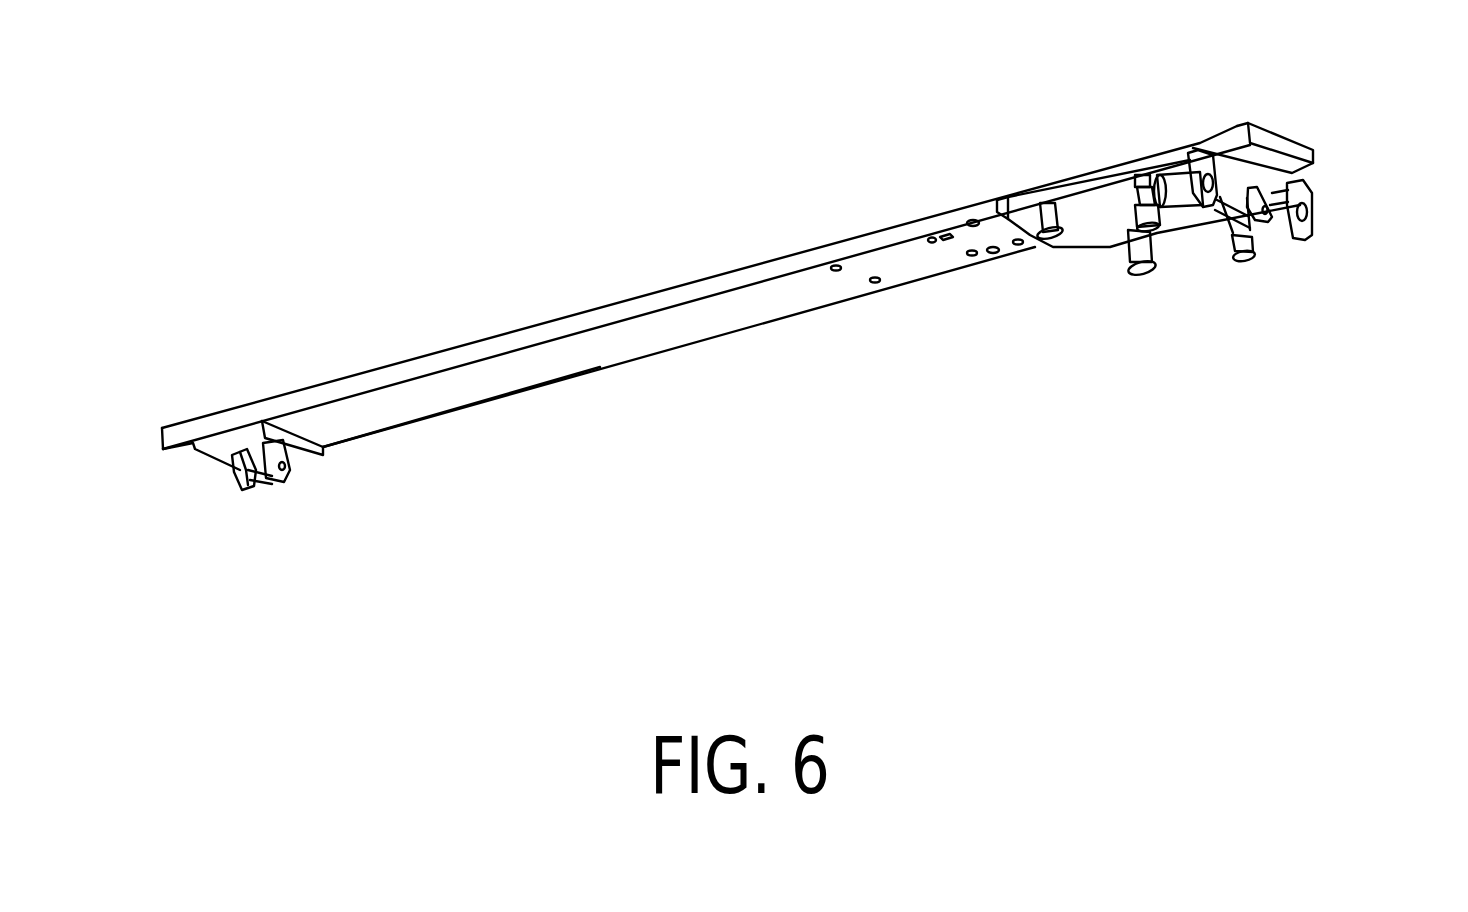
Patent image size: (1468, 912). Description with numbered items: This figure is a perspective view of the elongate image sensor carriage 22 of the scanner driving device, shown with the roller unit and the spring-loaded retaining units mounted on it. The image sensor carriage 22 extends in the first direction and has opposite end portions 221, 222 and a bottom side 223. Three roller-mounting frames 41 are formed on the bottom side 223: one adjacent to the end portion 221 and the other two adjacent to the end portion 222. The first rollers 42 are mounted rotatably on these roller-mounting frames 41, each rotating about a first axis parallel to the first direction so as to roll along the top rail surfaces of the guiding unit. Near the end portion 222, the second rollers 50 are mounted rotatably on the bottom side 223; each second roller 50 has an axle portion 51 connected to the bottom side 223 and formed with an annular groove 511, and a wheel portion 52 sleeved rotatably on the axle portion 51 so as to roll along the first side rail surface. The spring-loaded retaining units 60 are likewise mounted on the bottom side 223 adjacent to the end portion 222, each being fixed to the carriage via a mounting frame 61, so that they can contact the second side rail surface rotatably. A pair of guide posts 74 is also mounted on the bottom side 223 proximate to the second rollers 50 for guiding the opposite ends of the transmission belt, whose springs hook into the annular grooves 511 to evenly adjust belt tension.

The image sensor carriage 22 is at (656, 280).
The end portion 221 is at (172, 432).
The end portion 222 is at (1240, 124).
The bottom side 223 is at (668, 330).
The roller-mounting frame 41 is at (237, 470).
The first roller 42 is at (262, 488).
The second roller 50 is at (1128, 208).
The axle portion 51 is at (1140, 185).
The annular groove 511 is at (1146, 175).
The wheel portion 52 is at (1152, 278).
The spring-loaded retaining unit 60 is at (1330, 200).
The mounting frame 61 is at (1185, 150).
The guide post 74 is at (1004, 205).